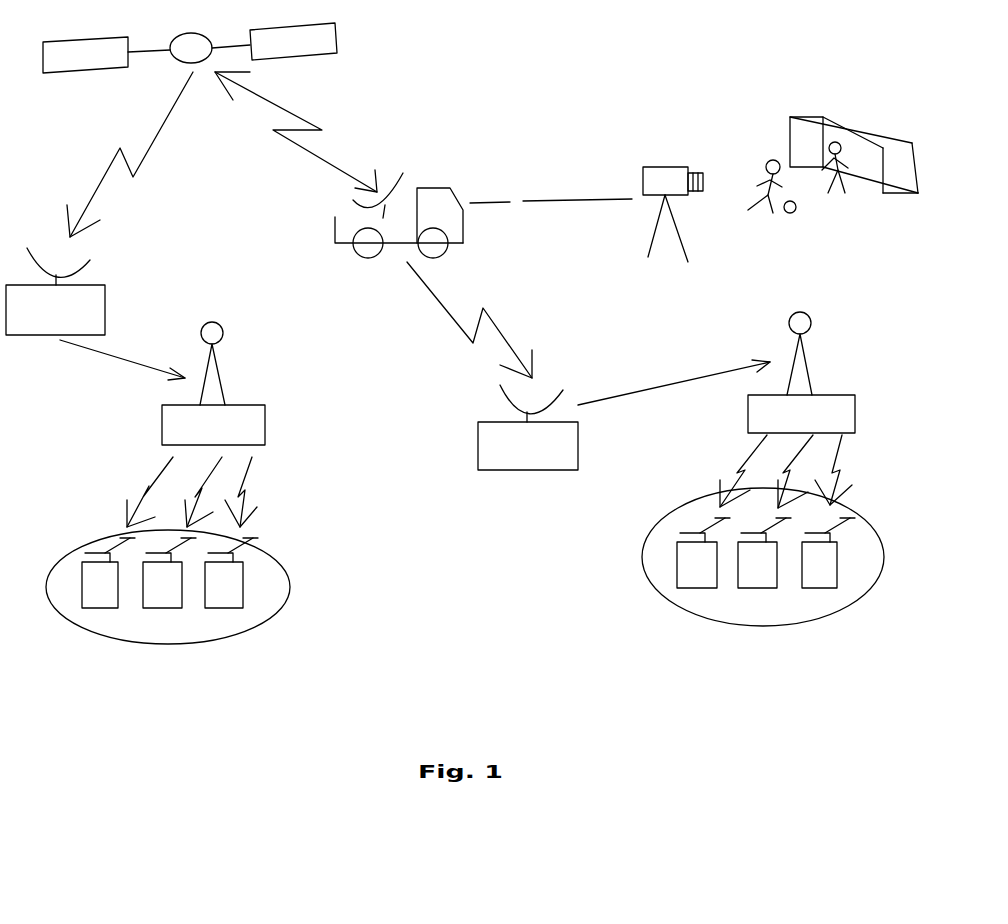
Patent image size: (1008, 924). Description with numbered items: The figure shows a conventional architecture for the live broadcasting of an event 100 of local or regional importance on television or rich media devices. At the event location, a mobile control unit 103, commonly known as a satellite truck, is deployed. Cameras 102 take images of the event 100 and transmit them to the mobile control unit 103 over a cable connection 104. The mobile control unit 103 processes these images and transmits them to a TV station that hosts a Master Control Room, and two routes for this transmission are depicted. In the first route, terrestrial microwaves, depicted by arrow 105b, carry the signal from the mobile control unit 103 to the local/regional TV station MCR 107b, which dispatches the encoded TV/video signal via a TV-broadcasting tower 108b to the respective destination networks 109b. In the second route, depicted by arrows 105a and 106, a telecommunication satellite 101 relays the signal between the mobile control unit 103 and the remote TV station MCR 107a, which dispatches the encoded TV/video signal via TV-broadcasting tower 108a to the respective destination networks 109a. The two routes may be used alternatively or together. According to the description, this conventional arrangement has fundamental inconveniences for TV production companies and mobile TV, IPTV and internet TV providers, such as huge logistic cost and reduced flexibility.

The event 100 is at (815, 116).
The telecommunication satellite 101 is at (190, 48).
The cameras 102 is at (666, 166).
The mobile control unit 103 is at (438, 184).
The cable connection 104 is at (557, 196).
The arrow (satellite uplink) 105a is at (327, 157).
The arrow (microwave link) 105b is at (462, 336).
The arrow (satellite downlink) 106 is at (99, 192).
The remote TV station MCR 107a is at (95, 314).
The local/regional TV station MCR 107b is at (624, 415).
The TV-broadcasting tower 108a is at (196, 424).
The TV-broadcasting tower 108b is at (787, 410).
The destination networks 109a is at (188, 587).
The destination networks 109b is at (781, 560).